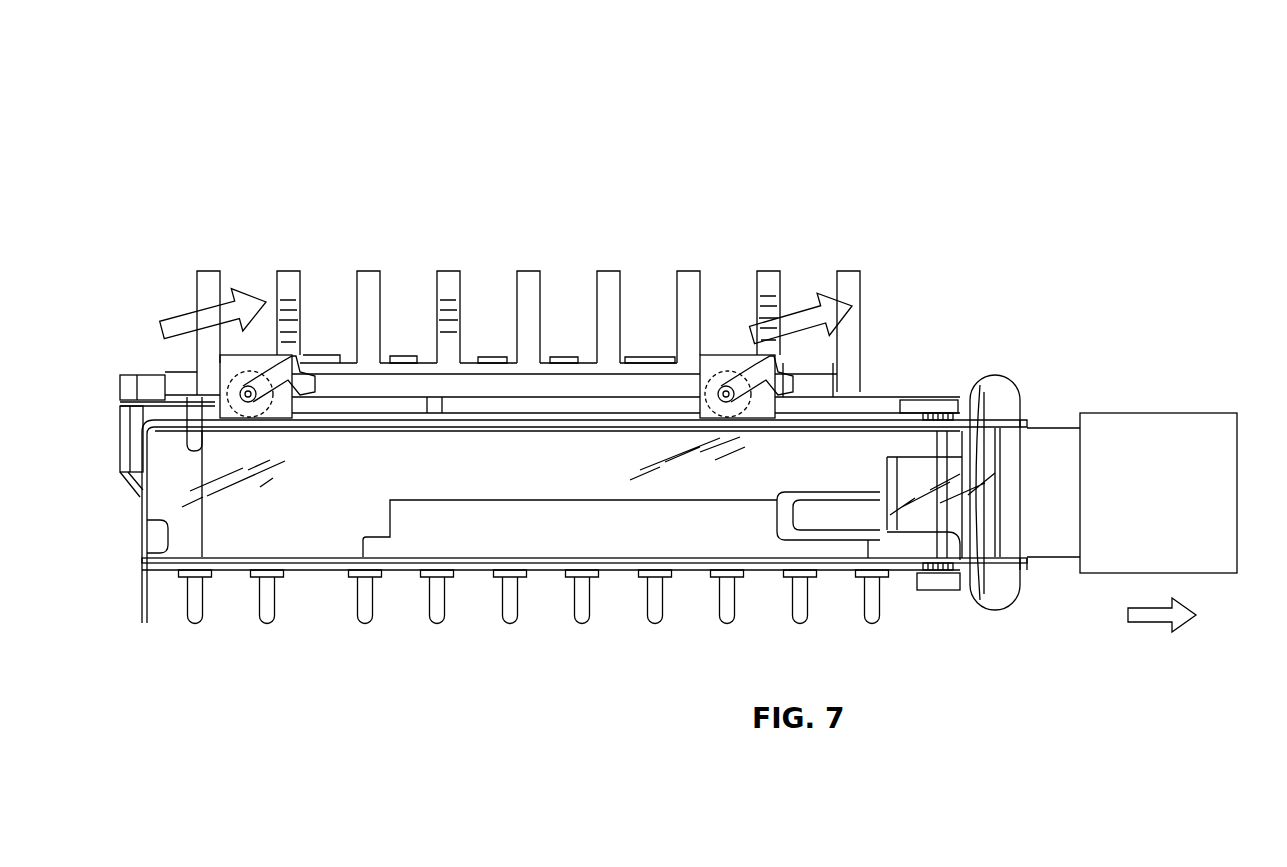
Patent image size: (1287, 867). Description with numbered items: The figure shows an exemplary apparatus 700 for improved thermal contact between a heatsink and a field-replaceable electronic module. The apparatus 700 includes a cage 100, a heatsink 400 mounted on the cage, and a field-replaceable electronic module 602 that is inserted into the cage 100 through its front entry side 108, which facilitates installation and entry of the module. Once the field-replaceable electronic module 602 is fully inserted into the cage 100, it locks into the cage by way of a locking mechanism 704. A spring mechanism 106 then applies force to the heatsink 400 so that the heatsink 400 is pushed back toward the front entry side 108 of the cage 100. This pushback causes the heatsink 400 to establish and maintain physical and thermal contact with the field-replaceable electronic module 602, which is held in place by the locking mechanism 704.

The apparatus 700 is at (657, 414).
The cage 100 is at (135, 560).
The spring mechanism 106 is at (120, 370).
The heatsink 400 is at (540, 292).
The front entry side 108 is at (1017, 380).
The locking mechanism 704 is at (905, 573).
The field-replaceable electronic module 602 is at (1107, 578).